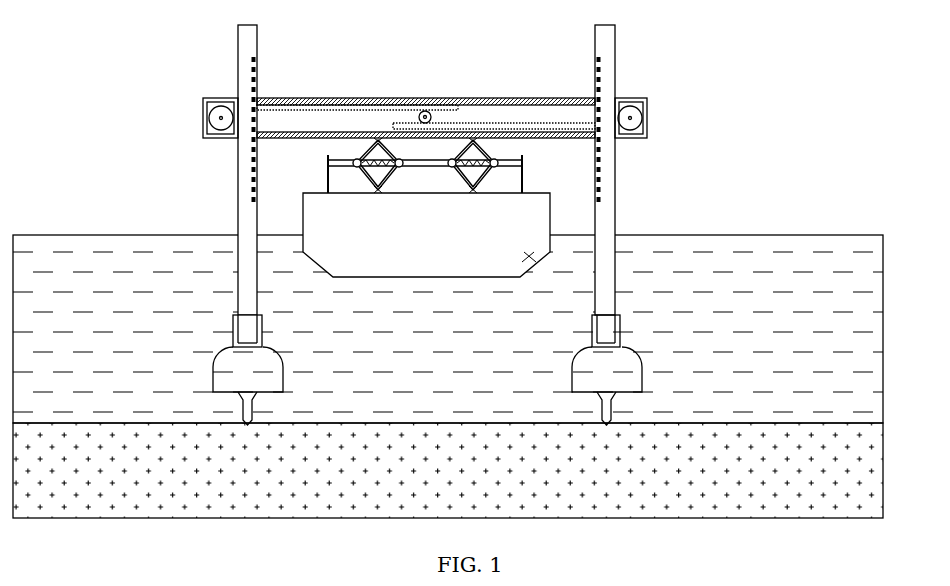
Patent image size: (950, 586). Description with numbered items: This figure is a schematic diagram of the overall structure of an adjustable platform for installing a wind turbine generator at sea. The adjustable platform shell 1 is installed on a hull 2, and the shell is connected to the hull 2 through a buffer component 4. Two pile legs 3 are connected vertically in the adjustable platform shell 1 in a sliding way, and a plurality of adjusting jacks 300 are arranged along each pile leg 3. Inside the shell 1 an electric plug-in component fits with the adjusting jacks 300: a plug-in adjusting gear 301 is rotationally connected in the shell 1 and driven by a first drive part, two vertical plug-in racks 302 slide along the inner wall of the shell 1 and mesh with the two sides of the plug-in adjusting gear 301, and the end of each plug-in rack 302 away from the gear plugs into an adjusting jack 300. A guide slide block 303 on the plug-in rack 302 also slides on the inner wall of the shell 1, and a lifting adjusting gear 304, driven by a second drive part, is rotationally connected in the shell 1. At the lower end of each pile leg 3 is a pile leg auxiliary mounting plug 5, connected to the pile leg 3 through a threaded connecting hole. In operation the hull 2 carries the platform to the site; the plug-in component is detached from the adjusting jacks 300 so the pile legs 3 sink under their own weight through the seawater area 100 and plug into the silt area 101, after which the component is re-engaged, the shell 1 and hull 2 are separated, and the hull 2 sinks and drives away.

The adjustable platform shell 1 is at (648, 130).
The hull 2 is at (530, 259).
The pile leg 3 is at (604, 300).
The buffer component 4 is at (522, 163).
The pile leg auxiliary mounting plug 5 is at (610, 379).
The seawater area 100 is at (850, 338).
The silt area 101 is at (856, 461).
The adjusting jack 300 is at (603, 190).
The plug-in adjusting gear 301 is at (430, 113).
The plug-in rack 302 is at (350, 107).
The guide slide block 303 is at (403, 108).
The lifting adjusting gear 304 is at (641, 120).